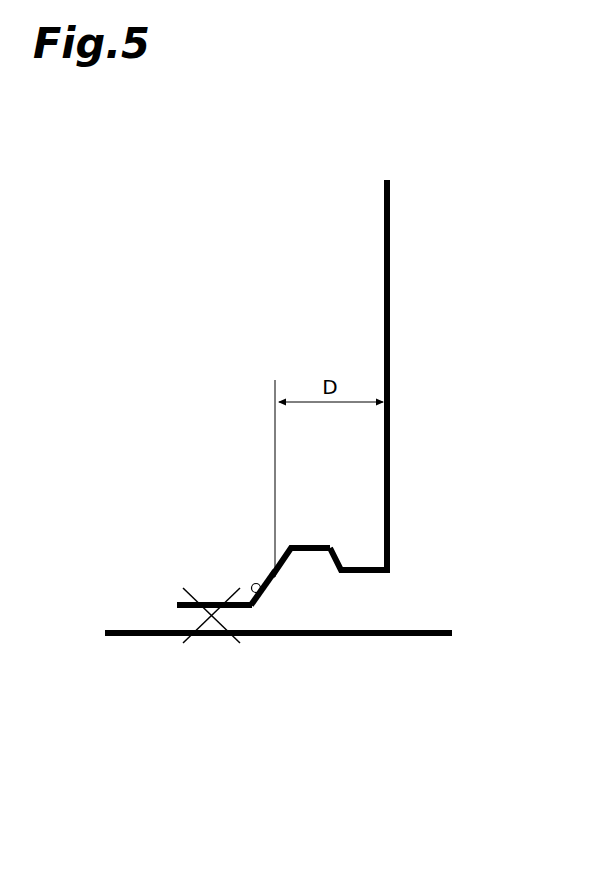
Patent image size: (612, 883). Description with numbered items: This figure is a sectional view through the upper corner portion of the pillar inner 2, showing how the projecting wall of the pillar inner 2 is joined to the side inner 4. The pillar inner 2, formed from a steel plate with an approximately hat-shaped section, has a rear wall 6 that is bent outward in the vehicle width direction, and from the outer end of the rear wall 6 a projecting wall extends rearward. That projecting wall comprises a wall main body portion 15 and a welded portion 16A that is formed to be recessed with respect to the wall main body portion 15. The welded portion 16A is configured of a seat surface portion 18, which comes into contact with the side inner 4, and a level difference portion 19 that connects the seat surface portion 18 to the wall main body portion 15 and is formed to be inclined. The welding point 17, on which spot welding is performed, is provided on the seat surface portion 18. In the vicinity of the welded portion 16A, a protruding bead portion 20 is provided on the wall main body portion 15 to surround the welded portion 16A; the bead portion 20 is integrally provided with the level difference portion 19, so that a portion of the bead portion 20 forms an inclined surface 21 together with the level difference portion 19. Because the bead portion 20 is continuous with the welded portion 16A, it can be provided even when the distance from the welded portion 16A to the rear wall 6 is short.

The pillar inner 2 is at (347, 361).
The side inner 4 is at (358, 637).
The rear wall 6 is at (383, 323).
The wall main body portion 15 is at (360, 567).
The welded portion 16A is at (212, 526).
The welding point 17 is at (213, 616).
The seat surface portion 18 is at (213, 603).
The level difference portion 19 is at (258, 584).
The bead portion 20 is at (310, 547).
The inclined surface 21 is at (257, 595).